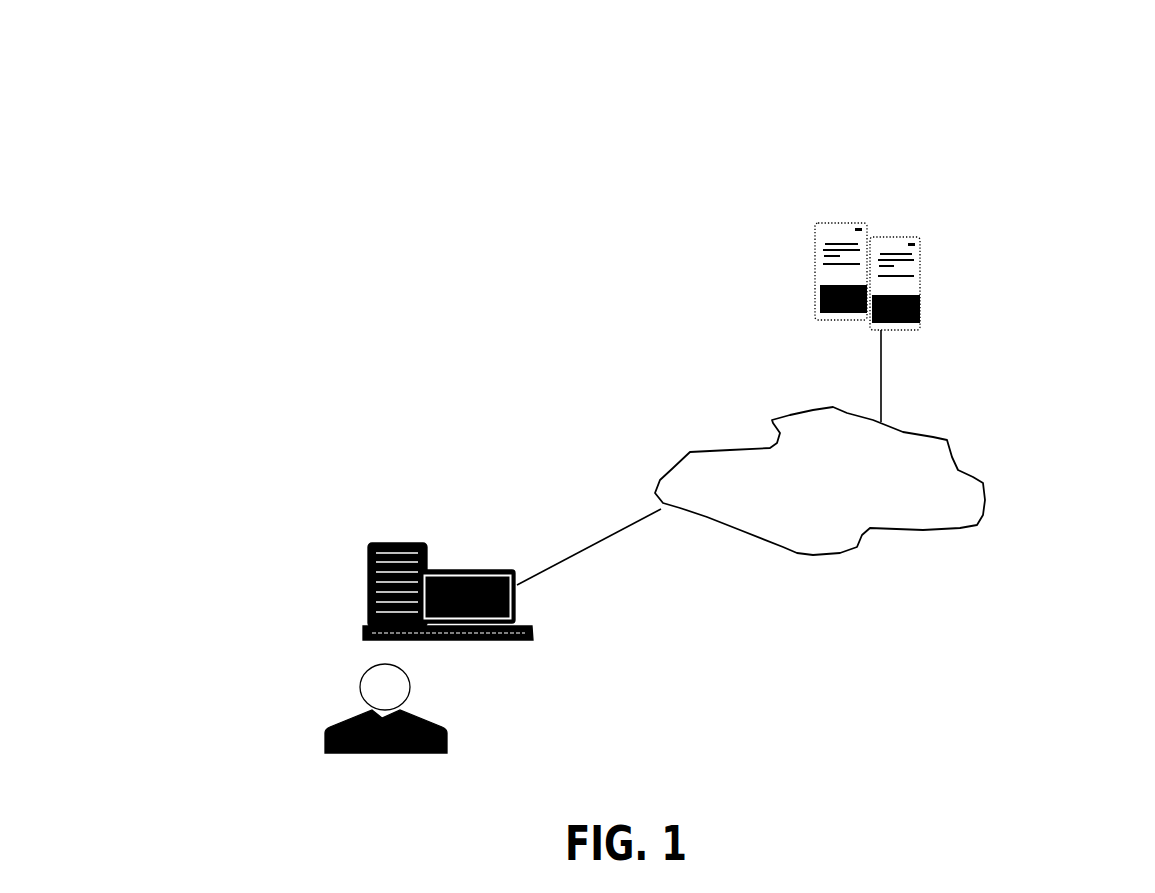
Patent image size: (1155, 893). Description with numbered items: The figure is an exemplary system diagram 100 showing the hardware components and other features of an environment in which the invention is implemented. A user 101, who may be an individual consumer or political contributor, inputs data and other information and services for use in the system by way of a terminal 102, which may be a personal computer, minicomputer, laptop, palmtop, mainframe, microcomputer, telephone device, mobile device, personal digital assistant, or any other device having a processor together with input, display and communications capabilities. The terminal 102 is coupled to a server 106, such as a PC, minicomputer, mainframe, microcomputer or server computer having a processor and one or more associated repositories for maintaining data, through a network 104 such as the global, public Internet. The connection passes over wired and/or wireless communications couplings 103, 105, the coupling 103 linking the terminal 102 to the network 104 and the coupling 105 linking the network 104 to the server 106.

The system diagram 100 is at (1050, 72).
The user 101 is at (363, 712).
The terminal 102 is at (367, 547).
The communications coupling 103 is at (597, 538).
The network 104 is at (777, 435).
The communications coupling 105 is at (875, 360).
The server 106 is at (922, 233).